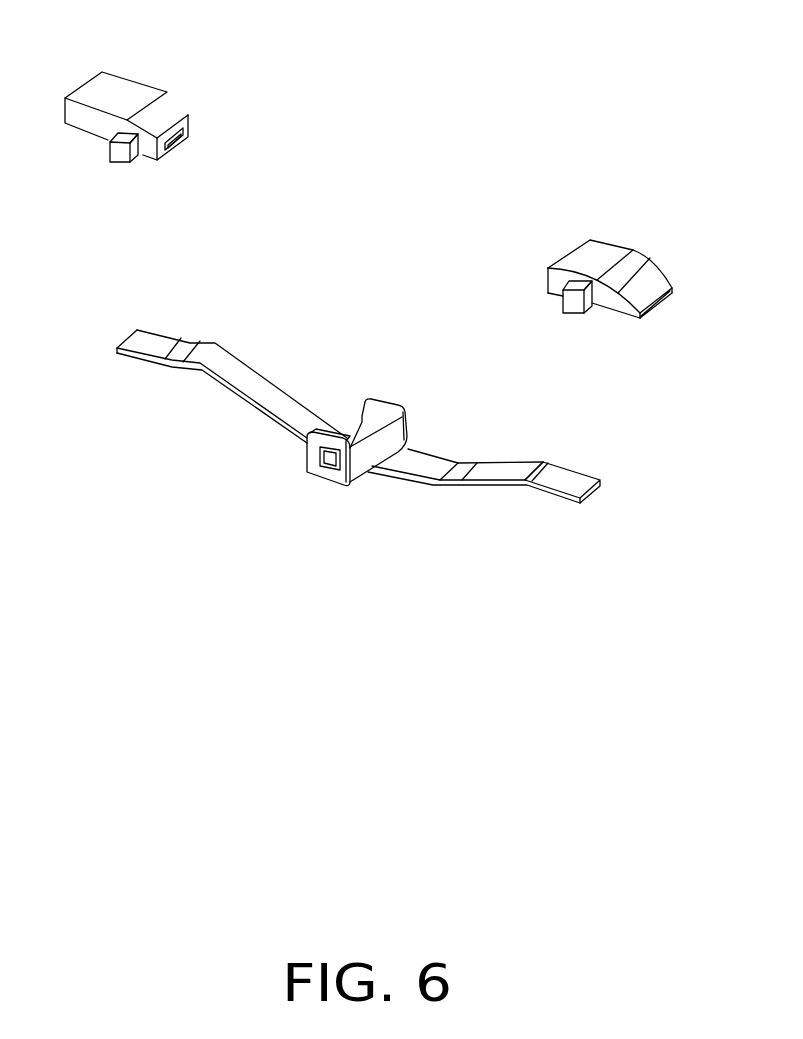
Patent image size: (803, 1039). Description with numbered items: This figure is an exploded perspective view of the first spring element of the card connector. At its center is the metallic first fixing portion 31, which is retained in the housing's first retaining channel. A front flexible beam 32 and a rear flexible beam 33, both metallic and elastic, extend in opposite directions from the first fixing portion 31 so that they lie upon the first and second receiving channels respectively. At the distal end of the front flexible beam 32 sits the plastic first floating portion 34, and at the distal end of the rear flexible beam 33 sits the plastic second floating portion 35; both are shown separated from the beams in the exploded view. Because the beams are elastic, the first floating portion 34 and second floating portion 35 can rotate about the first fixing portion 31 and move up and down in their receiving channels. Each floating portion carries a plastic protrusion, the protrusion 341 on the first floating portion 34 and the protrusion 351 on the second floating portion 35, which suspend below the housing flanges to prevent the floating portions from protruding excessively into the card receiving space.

The first fixing portion 31 is at (372, 452).
The front flexible beam 32 is at (495, 472).
The rear flexible beam 33 is at (265, 390).
The first floating portion 34 is at (605, 255).
The protrusion 341 is at (575, 300).
The second floating portion 35 is at (122, 95).
The protrusion 351 is at (122, 152).